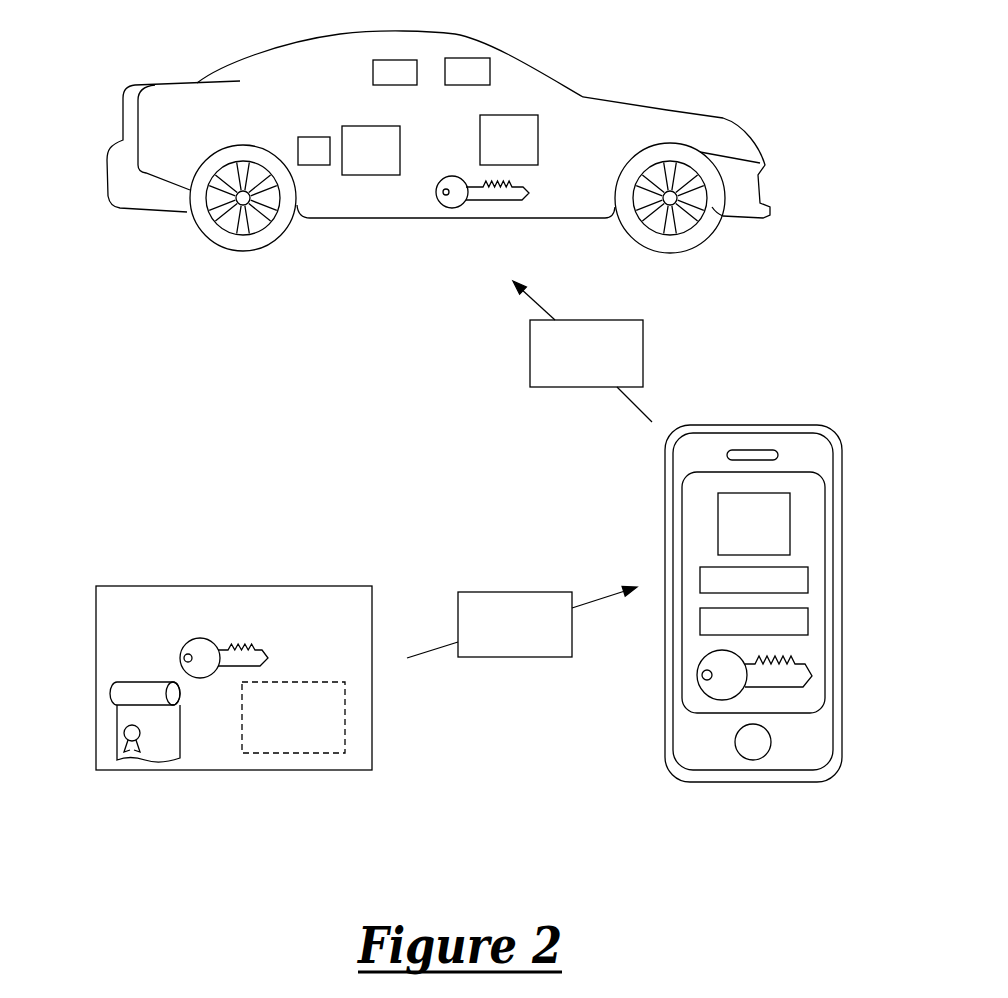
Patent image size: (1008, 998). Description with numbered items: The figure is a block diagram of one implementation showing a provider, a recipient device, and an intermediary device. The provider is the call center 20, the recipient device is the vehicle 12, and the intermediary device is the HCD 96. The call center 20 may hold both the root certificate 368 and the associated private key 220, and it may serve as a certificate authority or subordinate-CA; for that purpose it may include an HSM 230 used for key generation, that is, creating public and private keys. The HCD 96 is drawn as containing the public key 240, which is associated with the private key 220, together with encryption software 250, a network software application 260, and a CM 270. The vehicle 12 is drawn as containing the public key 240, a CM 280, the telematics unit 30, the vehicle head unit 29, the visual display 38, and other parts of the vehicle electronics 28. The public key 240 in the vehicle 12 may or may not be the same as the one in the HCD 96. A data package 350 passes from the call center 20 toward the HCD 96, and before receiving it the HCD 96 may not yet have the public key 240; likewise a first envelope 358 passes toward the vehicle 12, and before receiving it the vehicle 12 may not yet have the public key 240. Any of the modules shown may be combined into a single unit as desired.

The vehicle 12 is at (455, 34).
The call center 20 is at (96, 735).
The vehicle electronics 28 is at (310, 137).
The vehicle head unit 29 is at (373, 72).
The telematics unit 30 is at (362, 126).
The visual display 38 is at (490, 68).
The HCD 96 is at (842, 506).
The private key 220 is at (190, 643).
The HSM 230 is at (305, 753).
The public key 240 is at (527, 196).
The encryption software 250 is at (808, 575).
The network software application 260 is at (808, 622).
The CM 270 is at (790, 528).
The CM 280 is at (538, 137).
The data package 350 is at (572, 640).
The first envelope 358 is at (643, 348).
The root certificate 368 is at (118, 683).